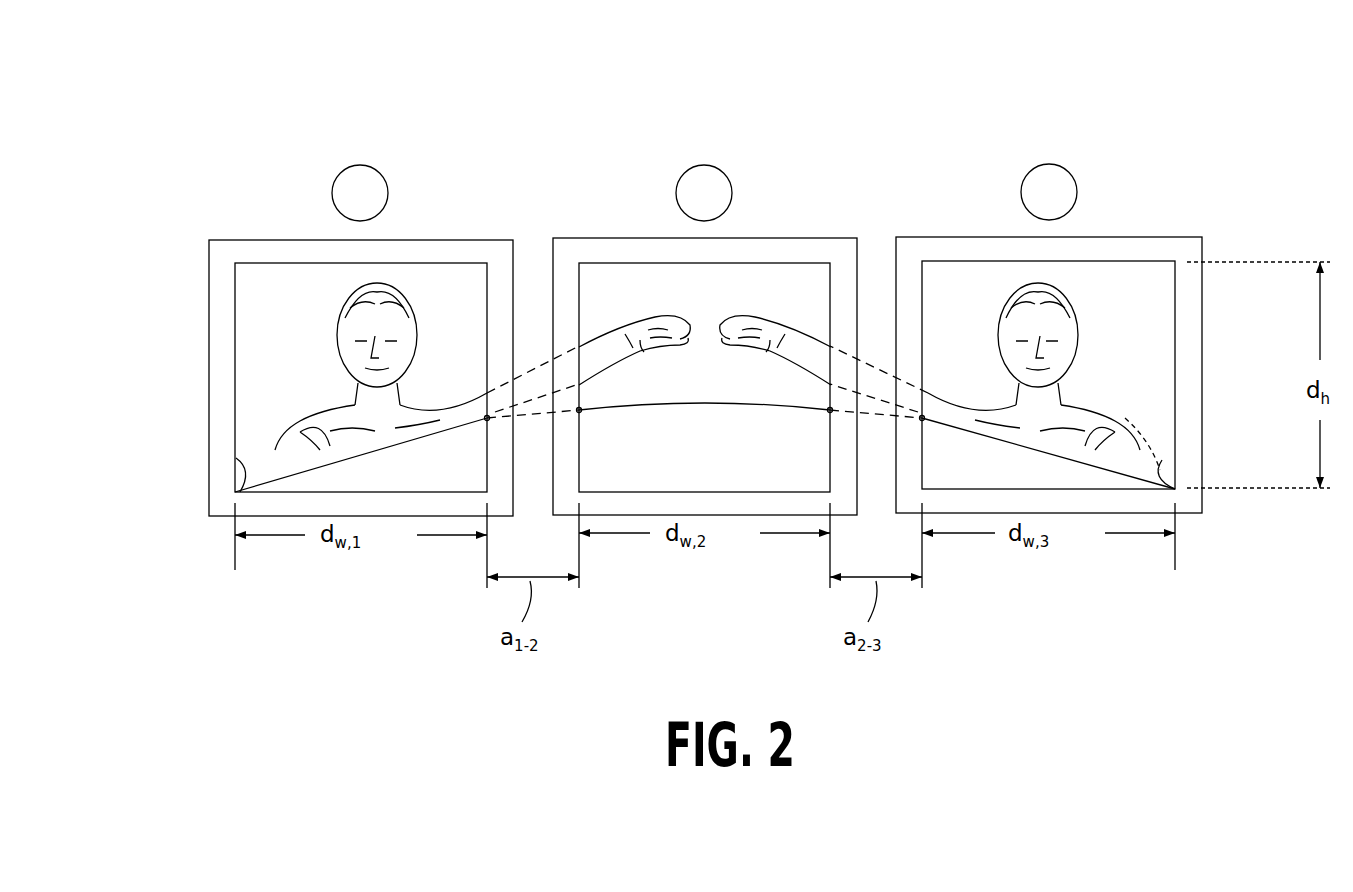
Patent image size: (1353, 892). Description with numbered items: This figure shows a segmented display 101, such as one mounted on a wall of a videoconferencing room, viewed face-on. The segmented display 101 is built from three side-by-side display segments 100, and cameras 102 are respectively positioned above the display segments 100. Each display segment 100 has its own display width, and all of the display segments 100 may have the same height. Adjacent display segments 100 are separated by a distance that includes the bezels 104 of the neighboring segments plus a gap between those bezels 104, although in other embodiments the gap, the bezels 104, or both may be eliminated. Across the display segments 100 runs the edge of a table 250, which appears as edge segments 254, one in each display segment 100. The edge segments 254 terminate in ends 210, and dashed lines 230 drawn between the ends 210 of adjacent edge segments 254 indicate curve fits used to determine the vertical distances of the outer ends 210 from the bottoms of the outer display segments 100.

The segmented display 101 is at (148, 298).
The display segments 100 is at (264, 272).
The cameras 102 is at (380, 171).
The bezels 104 is at (565, 284).
The ends of edge segments 210 is at (486, 421).
The dashed line 230 is at (530, 575).
The table 250 is at (1150, 455).
The edge segments 254 is at (236, 458).